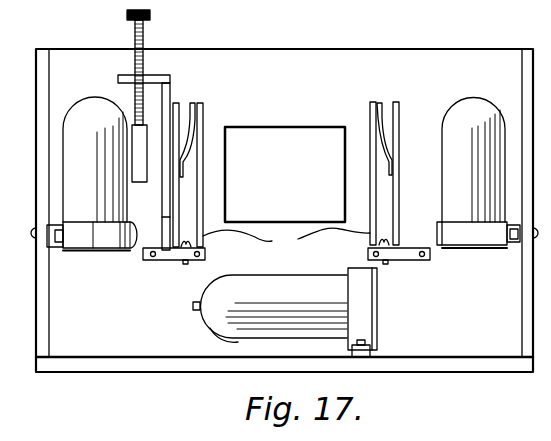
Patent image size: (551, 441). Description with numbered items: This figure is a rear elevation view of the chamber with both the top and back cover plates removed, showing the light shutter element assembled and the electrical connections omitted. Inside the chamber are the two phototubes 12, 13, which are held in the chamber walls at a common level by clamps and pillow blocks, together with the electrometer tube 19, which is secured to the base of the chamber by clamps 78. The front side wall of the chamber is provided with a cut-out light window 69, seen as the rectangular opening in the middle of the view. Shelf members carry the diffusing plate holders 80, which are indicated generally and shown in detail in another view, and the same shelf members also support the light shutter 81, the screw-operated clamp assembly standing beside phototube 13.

The phototube 12 is at (466, 108).
The phototube 13 is at (86, 112).
The electrometer tube 19 is at (215, 318).
The light window 69 is at (265, 140).
The clamps 78 is at (362, 319).
The diffusing plate holders 80 is at (286, 241).
The light shutter 81 is at (166, 102).